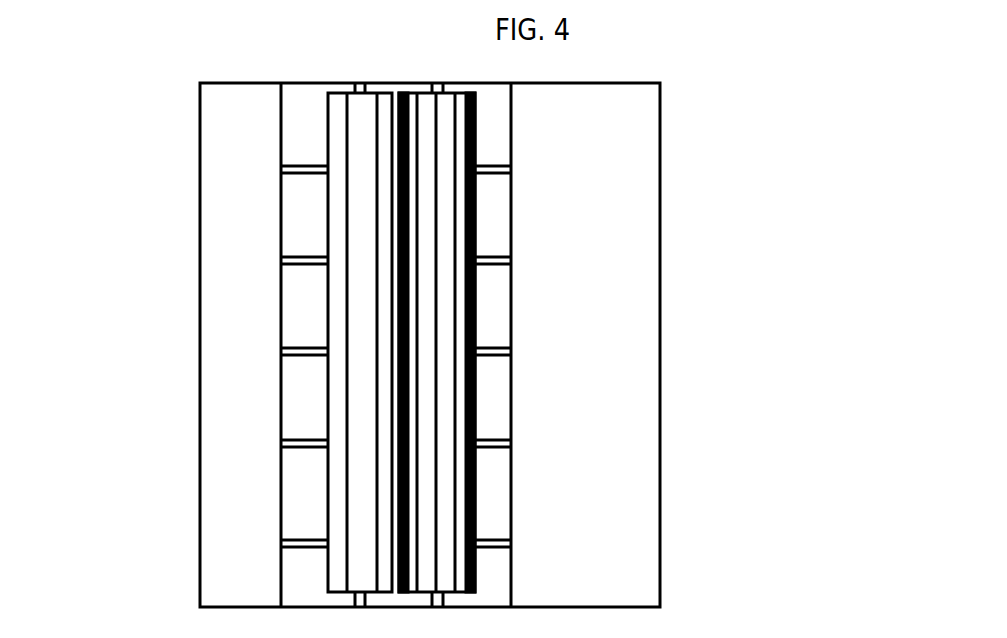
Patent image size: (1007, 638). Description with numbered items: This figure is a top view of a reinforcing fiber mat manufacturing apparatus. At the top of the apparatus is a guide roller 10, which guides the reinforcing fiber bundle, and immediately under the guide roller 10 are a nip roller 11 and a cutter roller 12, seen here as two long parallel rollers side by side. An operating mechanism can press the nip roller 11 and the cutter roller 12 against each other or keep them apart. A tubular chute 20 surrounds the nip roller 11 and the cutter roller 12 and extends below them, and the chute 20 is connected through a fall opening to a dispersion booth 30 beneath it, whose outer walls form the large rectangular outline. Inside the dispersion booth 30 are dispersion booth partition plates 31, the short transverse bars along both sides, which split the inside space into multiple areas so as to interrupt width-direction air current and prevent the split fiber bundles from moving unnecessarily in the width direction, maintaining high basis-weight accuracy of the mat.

The guide roller 10 is at (423, 336).
The nip roller 11 is at (327, 420).
The cutter roller 12 is at (460, 150).
The chute 20 is at (281, 127).
The dispersion booth 30 is at (660, 372).
The dispersion booth partition plates 31 is at (305, 538).